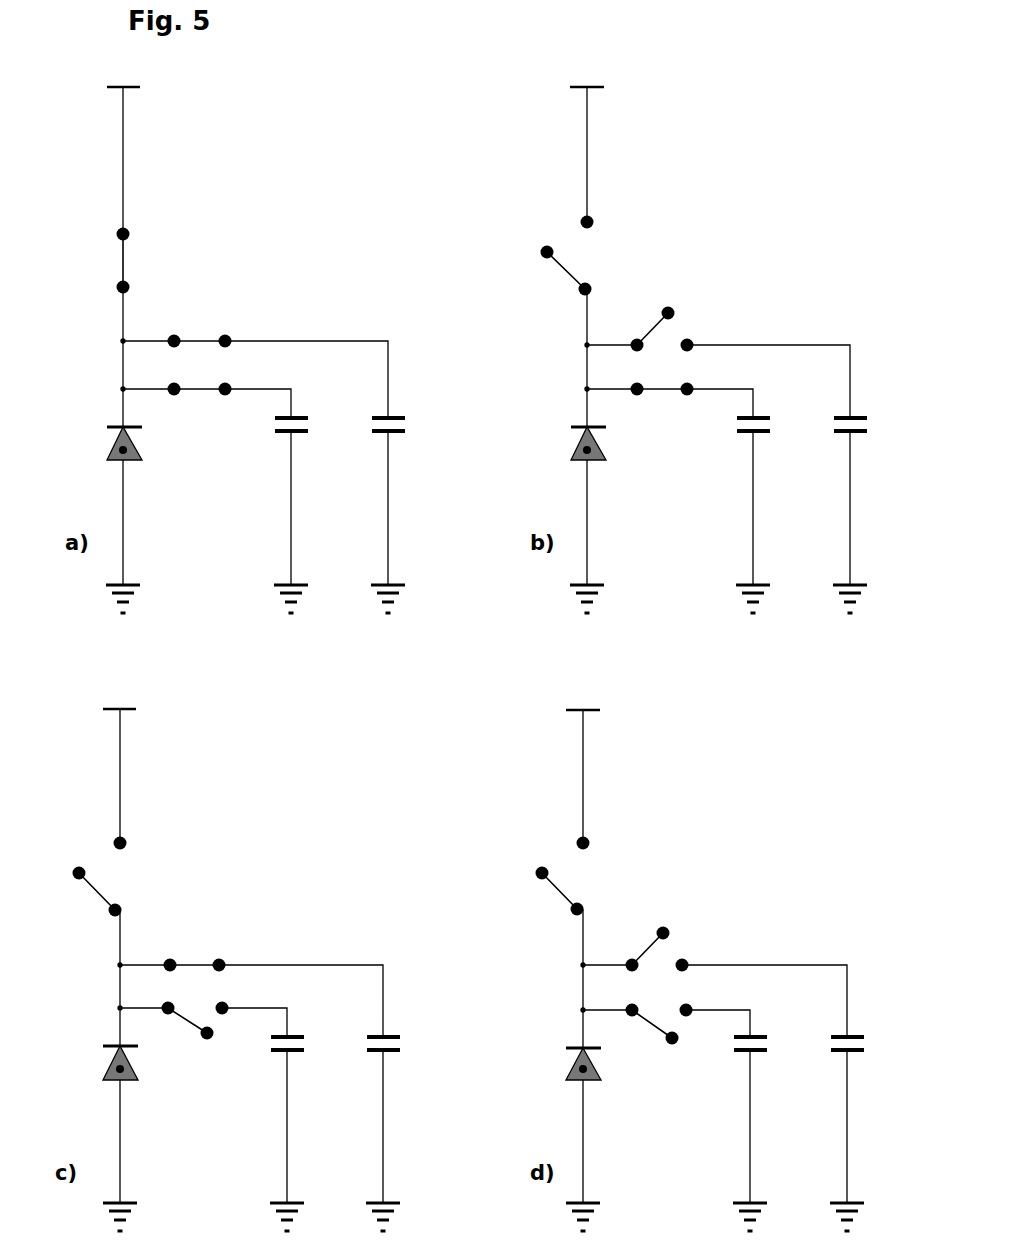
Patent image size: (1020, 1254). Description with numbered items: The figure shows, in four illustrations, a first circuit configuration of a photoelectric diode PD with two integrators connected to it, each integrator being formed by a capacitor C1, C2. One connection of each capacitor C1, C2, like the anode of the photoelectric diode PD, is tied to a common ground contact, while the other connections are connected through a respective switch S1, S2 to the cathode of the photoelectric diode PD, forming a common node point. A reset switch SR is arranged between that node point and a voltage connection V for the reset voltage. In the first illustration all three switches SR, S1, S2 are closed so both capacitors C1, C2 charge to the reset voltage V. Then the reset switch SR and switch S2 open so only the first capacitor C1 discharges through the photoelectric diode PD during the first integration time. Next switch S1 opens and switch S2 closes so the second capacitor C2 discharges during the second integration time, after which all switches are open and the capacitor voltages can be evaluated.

The voltage connection V is at (368, 386).
The reset switch SR is at (355, 566).
The first switch S1 is at (428, 731).
The second switch S2 is at (443, 635).
The photoelectric diode PD is at (322, 755).
The first capacitor C1 is at (506, 758).
The second capacitor C2 is at (633, 758).